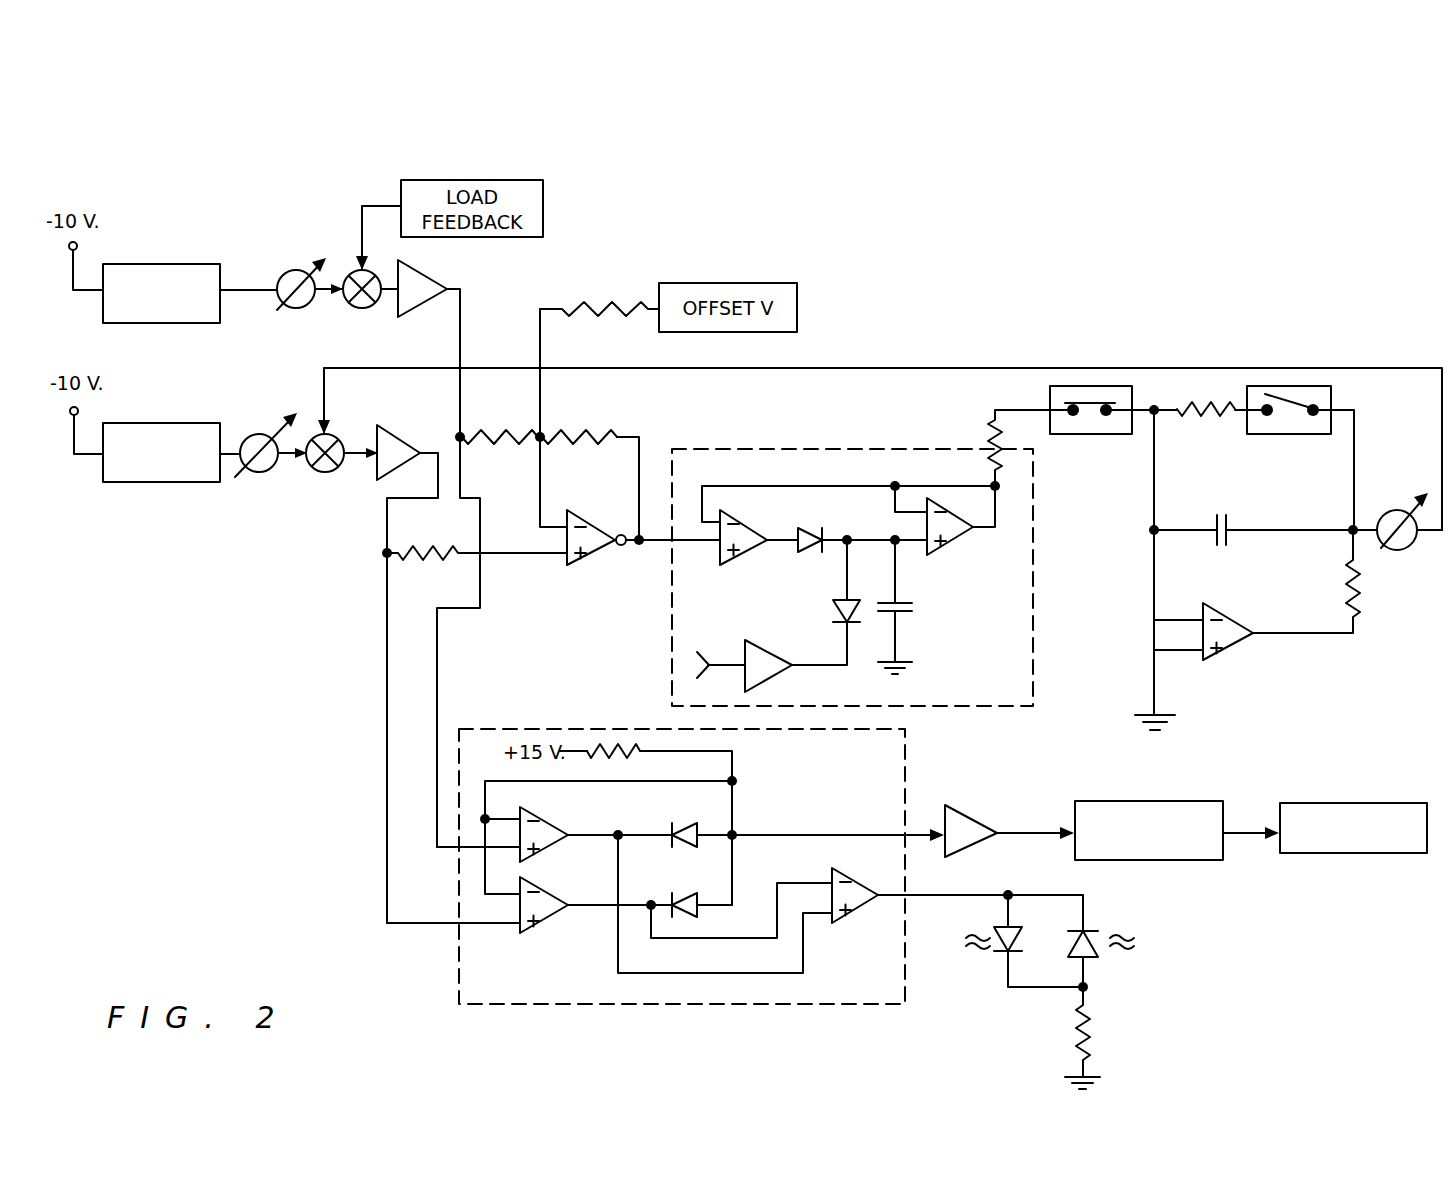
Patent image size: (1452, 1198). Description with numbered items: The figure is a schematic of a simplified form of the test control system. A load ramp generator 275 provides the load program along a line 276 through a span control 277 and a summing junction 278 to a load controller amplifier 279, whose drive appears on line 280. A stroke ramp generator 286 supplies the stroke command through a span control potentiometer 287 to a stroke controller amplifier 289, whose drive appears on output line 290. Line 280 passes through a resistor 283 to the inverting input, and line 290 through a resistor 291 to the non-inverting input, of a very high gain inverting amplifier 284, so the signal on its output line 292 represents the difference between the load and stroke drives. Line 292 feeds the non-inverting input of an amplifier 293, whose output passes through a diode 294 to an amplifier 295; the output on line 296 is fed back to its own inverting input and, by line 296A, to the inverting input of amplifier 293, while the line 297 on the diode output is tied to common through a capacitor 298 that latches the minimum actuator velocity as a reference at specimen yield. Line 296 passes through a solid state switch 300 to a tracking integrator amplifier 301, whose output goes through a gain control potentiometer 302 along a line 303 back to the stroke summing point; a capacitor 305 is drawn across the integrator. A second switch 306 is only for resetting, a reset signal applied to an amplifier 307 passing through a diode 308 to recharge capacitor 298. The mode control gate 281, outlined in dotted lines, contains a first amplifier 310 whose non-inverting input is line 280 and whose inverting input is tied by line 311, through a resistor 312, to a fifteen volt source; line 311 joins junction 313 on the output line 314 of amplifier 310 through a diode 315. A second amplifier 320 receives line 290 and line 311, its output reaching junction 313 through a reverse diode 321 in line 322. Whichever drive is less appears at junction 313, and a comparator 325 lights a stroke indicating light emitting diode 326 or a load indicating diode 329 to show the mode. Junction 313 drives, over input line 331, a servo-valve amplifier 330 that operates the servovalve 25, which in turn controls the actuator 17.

The actuator 17 is at (1303, 803).
The servovalve 25 is at (1160, 801).
The load ramp generator 275 is at (206, 264).
The line 276 is at (244, 290).
The span control 277 is at (300, 308).
The summing junction 278 is at (356, 276).
The load controller amplifier 279 is at (444, 283).
The line 280 is at (460, 310).
The mode control gate 281 is at (478, 1010).
The resistor 283 is at (495, 428).
The inverting amplifier 284 is at (592, 558).
The stroke ramp generator 286 is at (167, 483).
The span control potentiometer 287 is at (262, 474).
The stroke controller amplifier 289 is at (408, 409).
The output line 290 is at (387, 715).
The resistor 291 is at (410, 562).
The output line 292 is at (650, 547).
The amplifier 293 is at (757, 556).
The diode 294 is at (815, 530).
The amplifier 295 is at (937, 553).
The line 296 is at (995, 507).
The line 296A is at (913, 484).
The line 297 is at (866, 535).
The capacitor 298 is at (912, 610).
The switch 300 is at (1083, 386).
The tracking integrator amplifier 301 is at (1232, 648).
The gain control potentiometer 302 is at (1400, 550).
The line 303 is at (1197, 366).
The capacitor 305 is at (1232, 520).
The second switch 306 is at (1305, 386).
The amplifier 307 is at (778, 680).
The diode 308 is at (835, 603).
The first amplifier 310 is at (537, 853).
The line 311 is at (588, 782).
The resistor 312 is at (637, 745).
The junction 313 is at (700, 830).
The output line 314 is at (713, 840).
The diode 315 is at (735, 832).
The second amplifier 320 is at (553, 917).
The reverse diode 321 is at (700, 913).
The line 322 is at (634, 904).
The comparator 325 is at (855, 917).
The stroke indicating light emitting diode 326 is at (1015, 953).
The load diode 329 is at (1090, 931).
The servo-valve amplifier 330 is at (965, 812).
The input line 331 is at (873, 833).